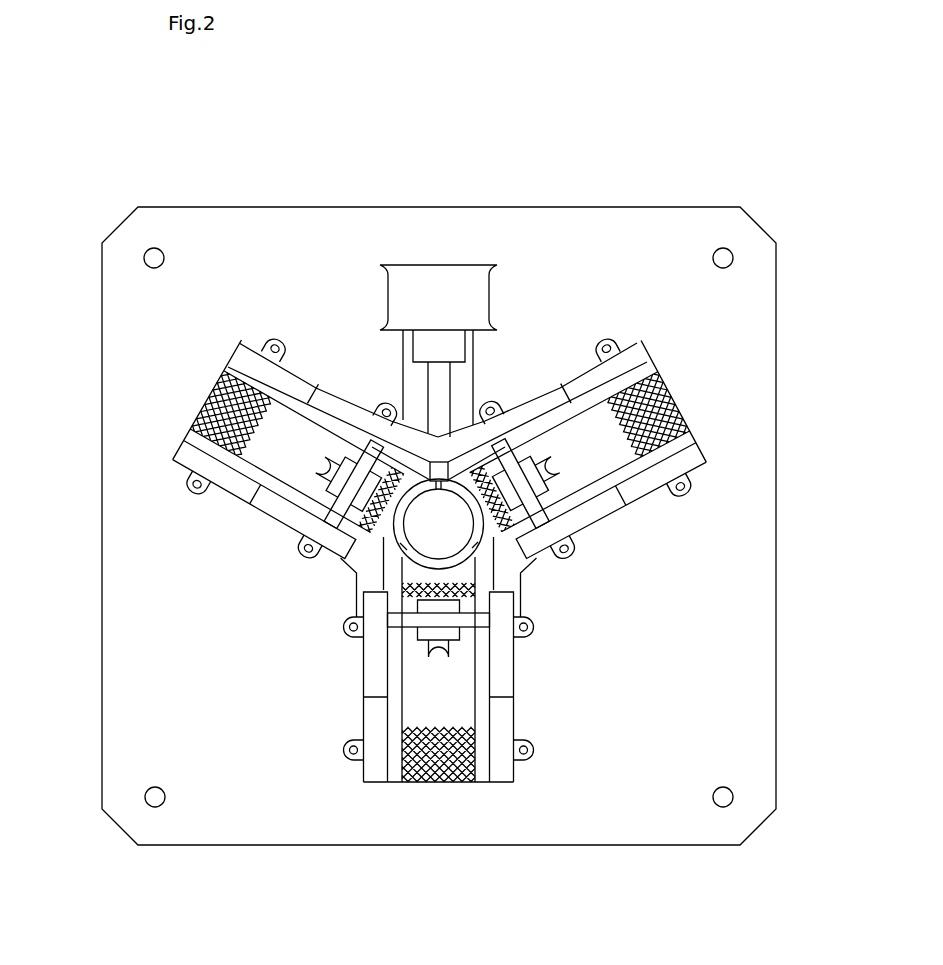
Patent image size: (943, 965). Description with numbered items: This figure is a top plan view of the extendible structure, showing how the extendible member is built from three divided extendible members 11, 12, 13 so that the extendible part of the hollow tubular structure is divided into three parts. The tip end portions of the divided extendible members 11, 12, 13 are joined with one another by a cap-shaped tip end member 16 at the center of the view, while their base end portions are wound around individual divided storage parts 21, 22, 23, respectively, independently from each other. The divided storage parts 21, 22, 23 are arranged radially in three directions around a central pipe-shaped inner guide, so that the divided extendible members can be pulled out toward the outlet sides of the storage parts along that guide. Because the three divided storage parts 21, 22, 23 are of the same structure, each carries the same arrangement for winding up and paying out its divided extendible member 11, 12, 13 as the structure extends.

The divided extendible member 11 is at (425, 725).
The divided extendible member 12 is at (630, 377).
The divided extendible member 13 is at (252, 382).
The cap-shaped tip end member 16 is at (392, 530).
The divided storage part 21 is at (349, 675).
The divided storage part 22 is at (718, 470).
The divided storage part 23 is at (180, 410).